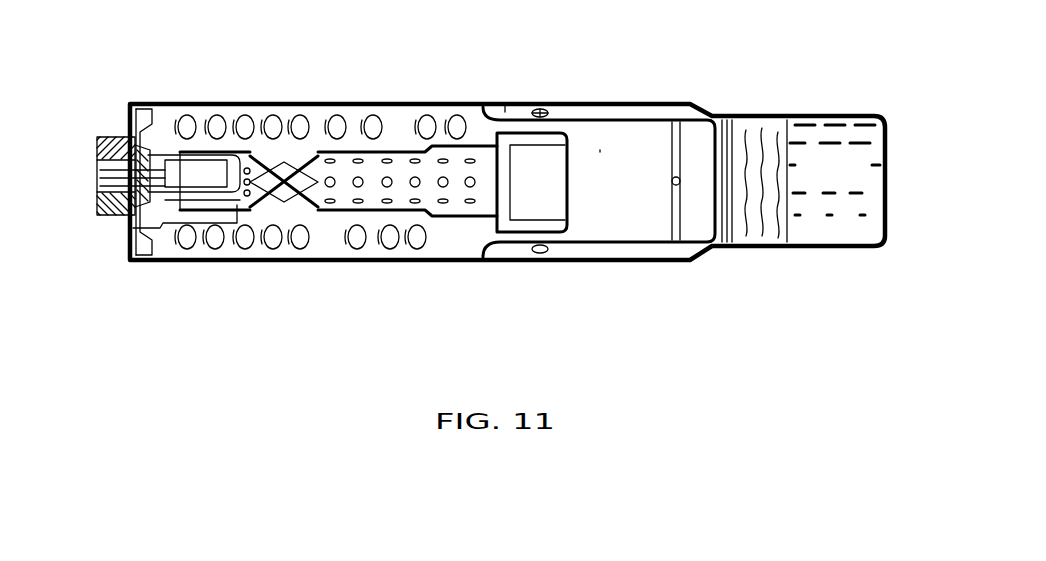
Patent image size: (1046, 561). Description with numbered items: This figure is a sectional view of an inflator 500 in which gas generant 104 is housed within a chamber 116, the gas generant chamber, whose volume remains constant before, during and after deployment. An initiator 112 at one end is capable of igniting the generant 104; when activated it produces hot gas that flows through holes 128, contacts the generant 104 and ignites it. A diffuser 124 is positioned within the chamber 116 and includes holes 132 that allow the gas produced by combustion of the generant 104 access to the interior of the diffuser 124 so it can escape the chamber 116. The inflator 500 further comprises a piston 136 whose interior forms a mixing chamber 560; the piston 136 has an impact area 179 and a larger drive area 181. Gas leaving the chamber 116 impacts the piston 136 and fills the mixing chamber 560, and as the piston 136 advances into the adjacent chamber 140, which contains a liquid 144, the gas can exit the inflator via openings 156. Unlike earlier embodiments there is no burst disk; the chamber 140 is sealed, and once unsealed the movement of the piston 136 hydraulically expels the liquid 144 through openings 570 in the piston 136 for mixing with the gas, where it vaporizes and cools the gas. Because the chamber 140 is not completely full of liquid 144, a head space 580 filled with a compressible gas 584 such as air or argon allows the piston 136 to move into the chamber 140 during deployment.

The initiator 112 is at (124, 112).
The diffuser 124 is at (305, 163).
The holes 132 is at (390, 152).
The drive area 181 is at (494, 98).
The openings 156 is at (541, 109).
The mixing chamber 560 is at (600, 150).
The piston 136 is at (680, 122).
The head space 580 is at (760, 130).
The chamber 140 is at (842, 138).
The liquid 144 is at (852, 178).
The holes 128 is at (247, 200).
The generant 104 is at (357, 226).
The chamber 116 is at (372, 245).
The inflator 500 is at (270, 275).
The openings 570 is at (676, 186).
The impact area 179 is at (720, 185).
The compressible gas 584 is at (758, 208).